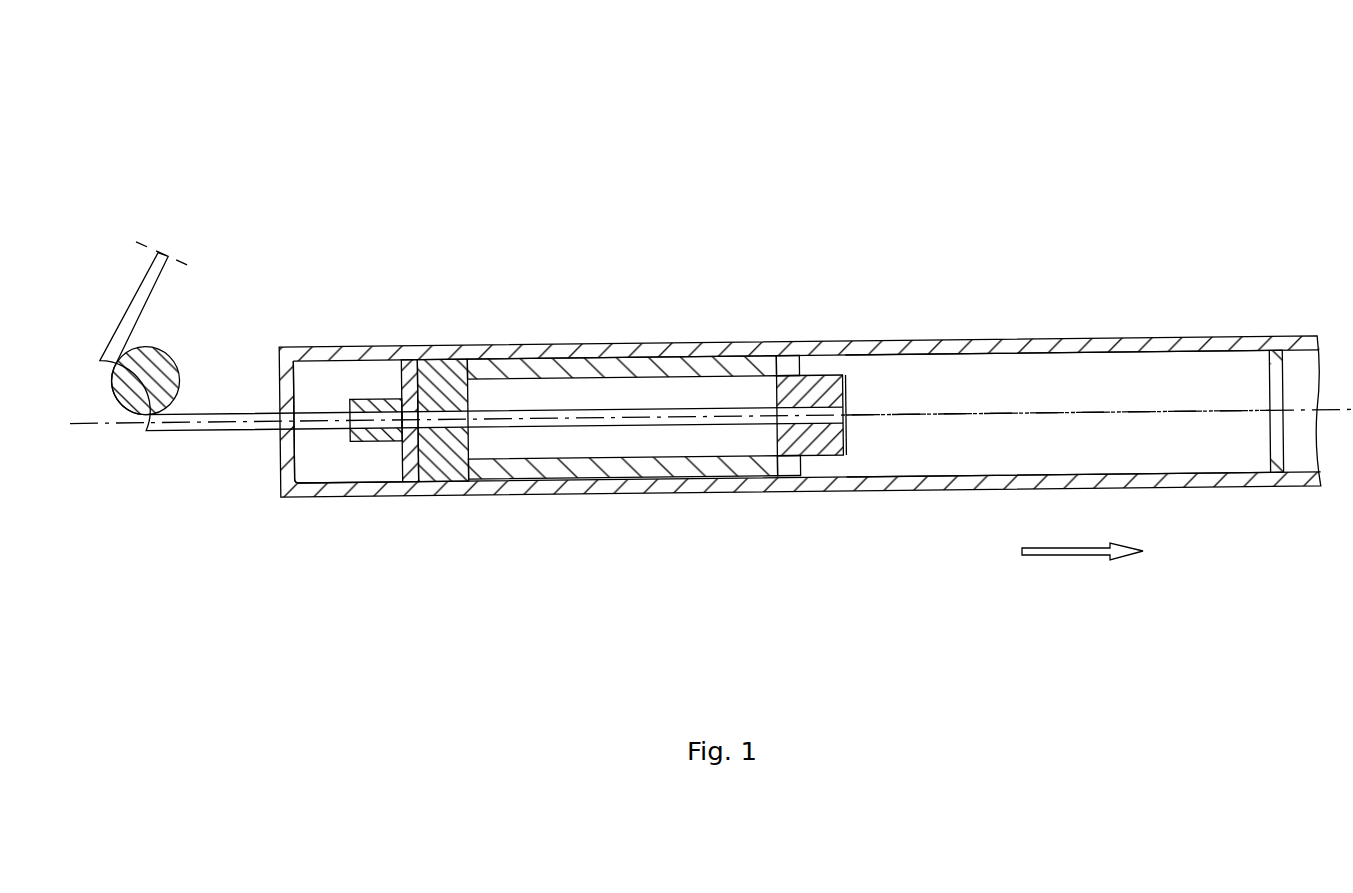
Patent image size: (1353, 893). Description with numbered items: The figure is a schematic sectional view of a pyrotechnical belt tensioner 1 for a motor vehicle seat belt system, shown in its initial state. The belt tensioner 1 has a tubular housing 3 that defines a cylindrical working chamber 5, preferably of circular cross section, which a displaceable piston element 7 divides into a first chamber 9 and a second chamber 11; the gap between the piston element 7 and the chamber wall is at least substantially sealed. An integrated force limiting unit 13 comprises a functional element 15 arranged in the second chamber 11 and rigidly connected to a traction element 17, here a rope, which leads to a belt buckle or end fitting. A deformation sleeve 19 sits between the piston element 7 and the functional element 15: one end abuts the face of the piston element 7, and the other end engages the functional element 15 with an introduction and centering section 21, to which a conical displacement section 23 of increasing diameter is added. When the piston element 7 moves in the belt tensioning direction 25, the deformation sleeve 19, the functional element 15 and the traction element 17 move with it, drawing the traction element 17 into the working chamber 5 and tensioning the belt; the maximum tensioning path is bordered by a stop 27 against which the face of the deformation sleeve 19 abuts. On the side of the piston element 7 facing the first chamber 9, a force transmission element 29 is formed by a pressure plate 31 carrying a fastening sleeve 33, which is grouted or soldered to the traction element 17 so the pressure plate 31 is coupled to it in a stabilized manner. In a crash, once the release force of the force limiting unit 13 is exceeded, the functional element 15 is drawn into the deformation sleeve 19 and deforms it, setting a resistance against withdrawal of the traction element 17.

The belt tensioner 1 is at (800, 263).
The tubular housing 3 is at (1180, 345).
The working chamber 5 is at (1040, 370).
The piston element 7 is at (443, 380).
The first chamber 9 is at (313, 378).
The second chamber 11 is at (960, 370).
The force limiting unit 13 is at (660, 332).
The functional element 15 is at (850, 460).
The traction element 17 is at (225, 412).
The deformation sleeve 19 is at (612, 372).
The introduction and centering section 21 is at (785, 372).
The conical displacement section 23 is at (832, 378).
The belt tensioning direction 25 is at (1075, 556).
The stop 27 is at (1272, 350).
The force transmission element 29 is at (388, 455).
The pressure plate 31 is at (406, 378).
The fastening sleeve 33 is at (357, 398).